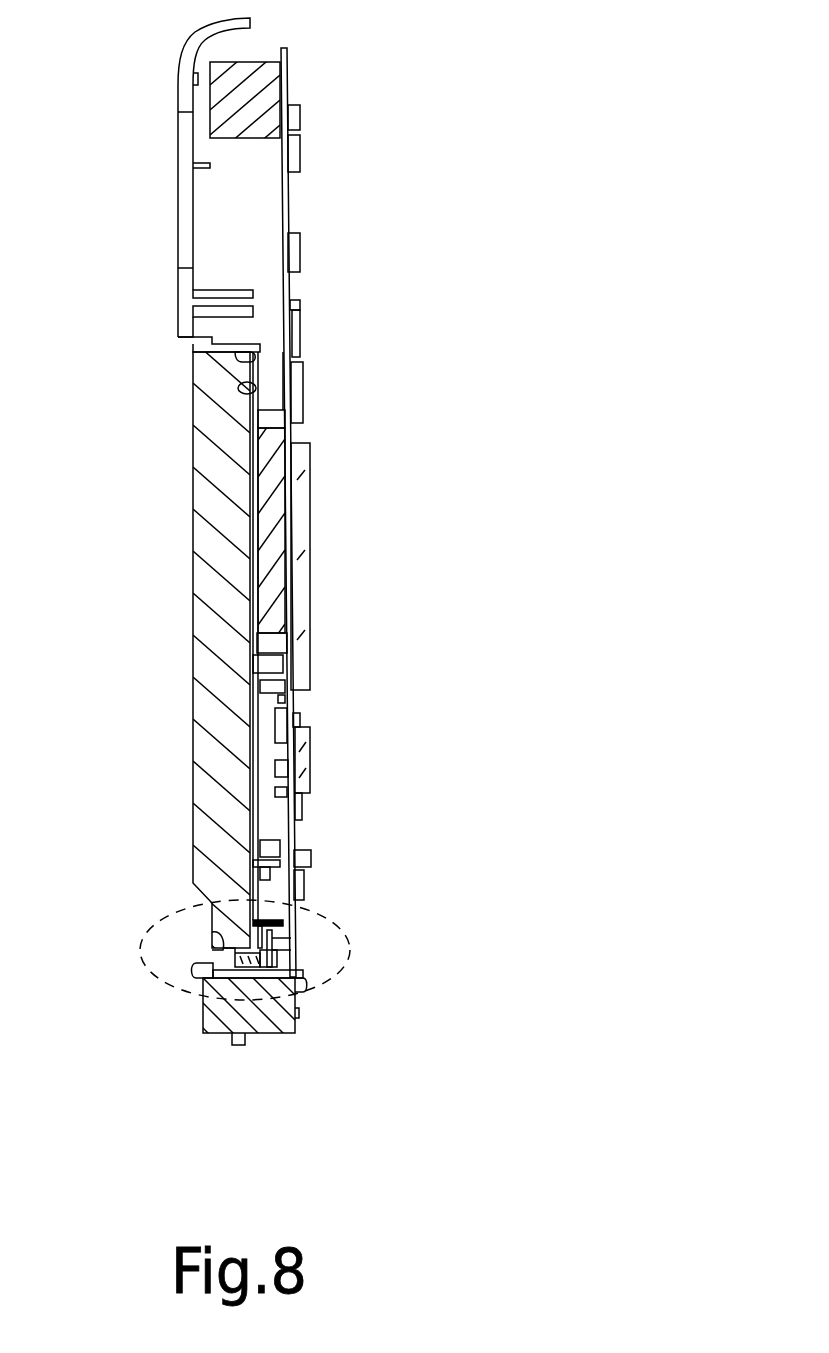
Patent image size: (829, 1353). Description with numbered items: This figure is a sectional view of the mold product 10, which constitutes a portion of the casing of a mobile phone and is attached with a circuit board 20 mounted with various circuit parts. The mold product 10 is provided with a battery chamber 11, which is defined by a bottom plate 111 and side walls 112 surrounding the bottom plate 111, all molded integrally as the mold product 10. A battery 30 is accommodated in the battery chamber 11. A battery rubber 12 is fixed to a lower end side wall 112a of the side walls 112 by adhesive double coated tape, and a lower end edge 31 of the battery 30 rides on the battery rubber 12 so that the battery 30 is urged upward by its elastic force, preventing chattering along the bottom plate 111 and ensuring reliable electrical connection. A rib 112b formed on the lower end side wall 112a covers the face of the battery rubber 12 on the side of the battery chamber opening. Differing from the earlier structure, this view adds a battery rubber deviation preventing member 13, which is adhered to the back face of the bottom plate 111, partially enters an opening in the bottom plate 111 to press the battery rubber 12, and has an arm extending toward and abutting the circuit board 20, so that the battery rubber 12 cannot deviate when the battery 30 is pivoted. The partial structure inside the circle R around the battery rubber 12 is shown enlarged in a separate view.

The mold product 10 is at (186, 284).
The battery chamber 11 is at (167, 408).
The battery rubber 12 is at (297, 956).
The battery rubber deviation preventing member 13 is at (297, 928).
The circuit board 20 is at (297, 222).
The battery 30 is at (207, 478).
The lower end edge 31 is at (190, 967).
The bottom plate 111 is at (256, 388).
The side walls 112 is at (240, 362).
The lower end side wall 112a is at (322, 980).
The rib 112b is at (213, 932).
The circle R is at (327, 915).